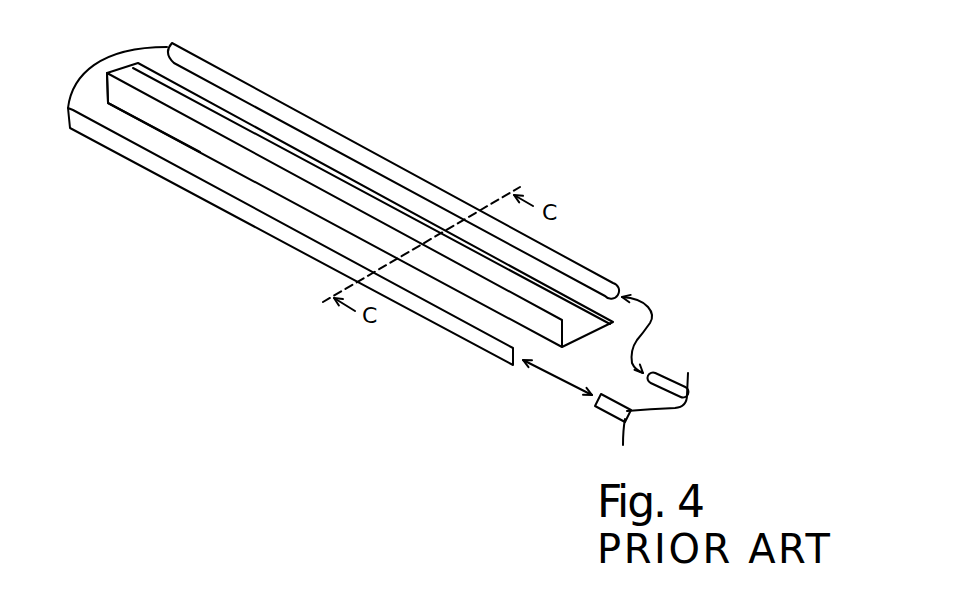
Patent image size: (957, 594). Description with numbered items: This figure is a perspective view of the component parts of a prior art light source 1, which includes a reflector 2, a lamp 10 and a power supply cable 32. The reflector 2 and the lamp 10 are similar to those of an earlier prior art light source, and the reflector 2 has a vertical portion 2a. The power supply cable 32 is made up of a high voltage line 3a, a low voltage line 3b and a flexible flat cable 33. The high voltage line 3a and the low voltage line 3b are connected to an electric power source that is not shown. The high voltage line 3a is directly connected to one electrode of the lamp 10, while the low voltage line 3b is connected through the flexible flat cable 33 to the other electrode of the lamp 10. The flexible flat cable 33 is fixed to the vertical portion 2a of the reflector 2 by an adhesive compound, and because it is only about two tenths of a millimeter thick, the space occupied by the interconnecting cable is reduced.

The light source 1 is at (590, 184).
The reflector 2 is at (341, 213).
The vertical portion 2a is at (140, 113).
The lamp 10 is at (345, 147).
The power supply cable 32 is at (708, 252).
The flexible flat cable 33 is at (487, 341).
The high voltage line 3a is at (661, 377).
The low voltage line 3b is at (598, 407).